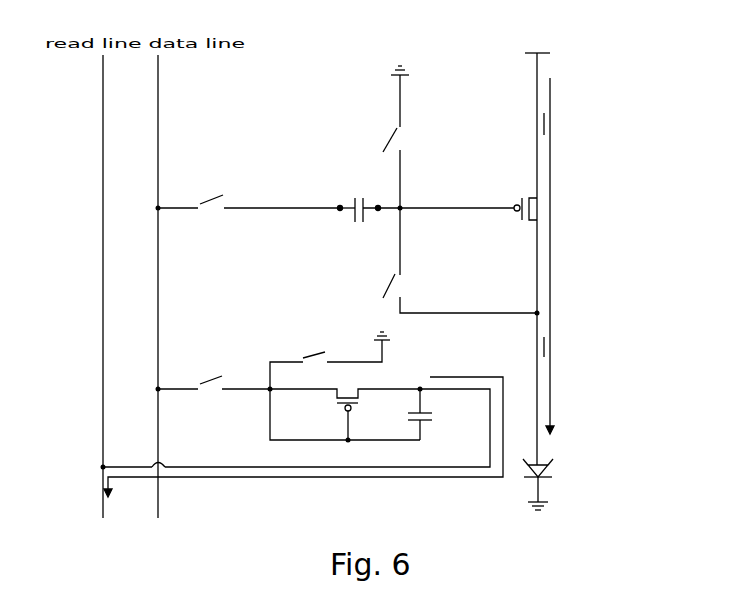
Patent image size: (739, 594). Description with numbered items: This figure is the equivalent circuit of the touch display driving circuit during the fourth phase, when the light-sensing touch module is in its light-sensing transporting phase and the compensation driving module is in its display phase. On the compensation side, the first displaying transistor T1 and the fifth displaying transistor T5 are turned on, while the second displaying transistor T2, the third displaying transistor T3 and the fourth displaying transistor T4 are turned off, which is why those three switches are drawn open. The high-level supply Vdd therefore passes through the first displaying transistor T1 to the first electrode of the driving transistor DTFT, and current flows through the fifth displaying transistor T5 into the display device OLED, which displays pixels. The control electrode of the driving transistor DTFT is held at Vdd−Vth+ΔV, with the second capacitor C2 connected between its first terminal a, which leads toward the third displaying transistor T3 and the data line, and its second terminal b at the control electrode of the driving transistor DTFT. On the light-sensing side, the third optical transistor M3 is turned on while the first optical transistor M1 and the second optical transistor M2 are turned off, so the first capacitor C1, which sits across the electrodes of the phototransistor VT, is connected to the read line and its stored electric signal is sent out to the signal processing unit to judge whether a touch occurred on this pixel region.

The Vdd signal Vdd is at (534, 248).
The first displaying transistor T1 is at (529, 124).
The second displaying transistor T2 is at (403, 137).
The third displaying transistor T3 is at (249, 210).
The fourth displaying transistor T4 is at (449, 260).
The fifth displaying transistor T5 is at (528, 347).
The driving transistor DTFT is at (495, 209).
The first capacitor C1 is at (410, 414).
The second capacitor C2 is at (370, 204).
The first terminal of the second capacitor a is at (338, 220).
The second terminal of the second capacitor b is at (378, 220).
The first optical transistor M1 is at (330, 360).
The second optical transistor M2 is at (214, 395).
The third optical transistor M3 is at (303, 437).
The phototransistor VT is at (345, 405).
The display device OLED is at (561, 484).